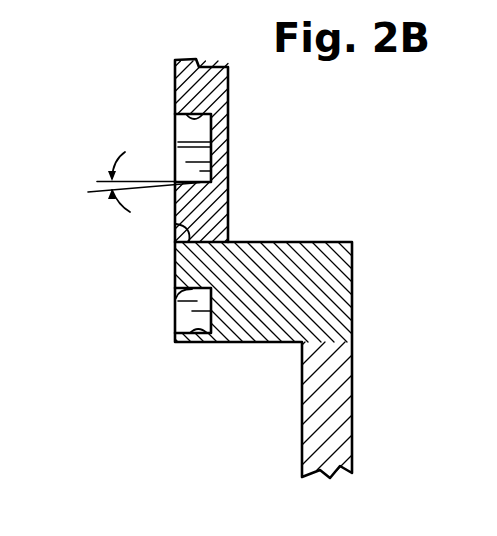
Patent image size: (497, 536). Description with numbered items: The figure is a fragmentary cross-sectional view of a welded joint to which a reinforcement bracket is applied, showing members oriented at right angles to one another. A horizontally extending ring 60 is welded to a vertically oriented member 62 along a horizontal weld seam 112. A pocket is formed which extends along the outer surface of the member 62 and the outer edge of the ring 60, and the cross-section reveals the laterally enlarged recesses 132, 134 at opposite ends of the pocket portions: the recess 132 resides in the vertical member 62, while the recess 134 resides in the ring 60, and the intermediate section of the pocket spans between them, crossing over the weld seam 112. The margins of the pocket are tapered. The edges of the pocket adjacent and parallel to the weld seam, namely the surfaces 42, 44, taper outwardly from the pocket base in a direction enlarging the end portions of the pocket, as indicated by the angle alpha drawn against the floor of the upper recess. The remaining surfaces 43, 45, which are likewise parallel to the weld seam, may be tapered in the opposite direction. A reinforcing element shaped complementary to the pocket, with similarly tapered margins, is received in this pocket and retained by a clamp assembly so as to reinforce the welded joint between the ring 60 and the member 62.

The ring 60 is at (290, 250).
The member 62 is at (229, 82).
The surface 43 is at (176, 113).
The surface 42 is at (200, 182).
The laterally enlarged recess 132 is at (190, 131).
The weld seam 112 is at (175, 225).
The surface 44 is at (176, 298).
The laterally enlarged recess 134 is at (176, 324).
The surface 45 is at (201, 333).